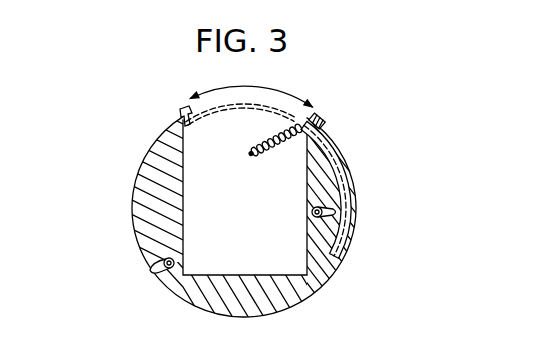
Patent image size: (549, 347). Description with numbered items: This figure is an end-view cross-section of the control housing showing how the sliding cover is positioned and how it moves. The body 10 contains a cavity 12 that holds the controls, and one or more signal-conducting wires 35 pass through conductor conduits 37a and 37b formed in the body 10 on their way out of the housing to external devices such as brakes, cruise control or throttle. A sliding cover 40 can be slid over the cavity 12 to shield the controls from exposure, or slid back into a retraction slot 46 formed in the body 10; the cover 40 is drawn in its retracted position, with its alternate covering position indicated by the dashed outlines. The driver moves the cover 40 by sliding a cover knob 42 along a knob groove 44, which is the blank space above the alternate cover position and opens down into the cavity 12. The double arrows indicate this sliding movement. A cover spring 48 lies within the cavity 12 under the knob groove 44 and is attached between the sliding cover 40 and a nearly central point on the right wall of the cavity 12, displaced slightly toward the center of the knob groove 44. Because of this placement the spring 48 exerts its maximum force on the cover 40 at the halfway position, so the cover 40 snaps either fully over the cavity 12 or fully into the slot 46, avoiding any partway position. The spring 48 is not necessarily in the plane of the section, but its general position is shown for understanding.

The body 10 is at (138, 210).
The cavity 12 is at (192, 138).
The signal-conducting wires 35 is at (164, 262).
The conductor conduit 37a is at (337, 211).
The conductor conduit 37b is at (156, 273).
The sliding cover 40 is at (345, 160).
The cover knob 42 is at (327, 121).
The knob groove 44 is at (250, 103).
The retraction slot 46 is at (338, 259).
The cover spring 48 is at (295, 122).